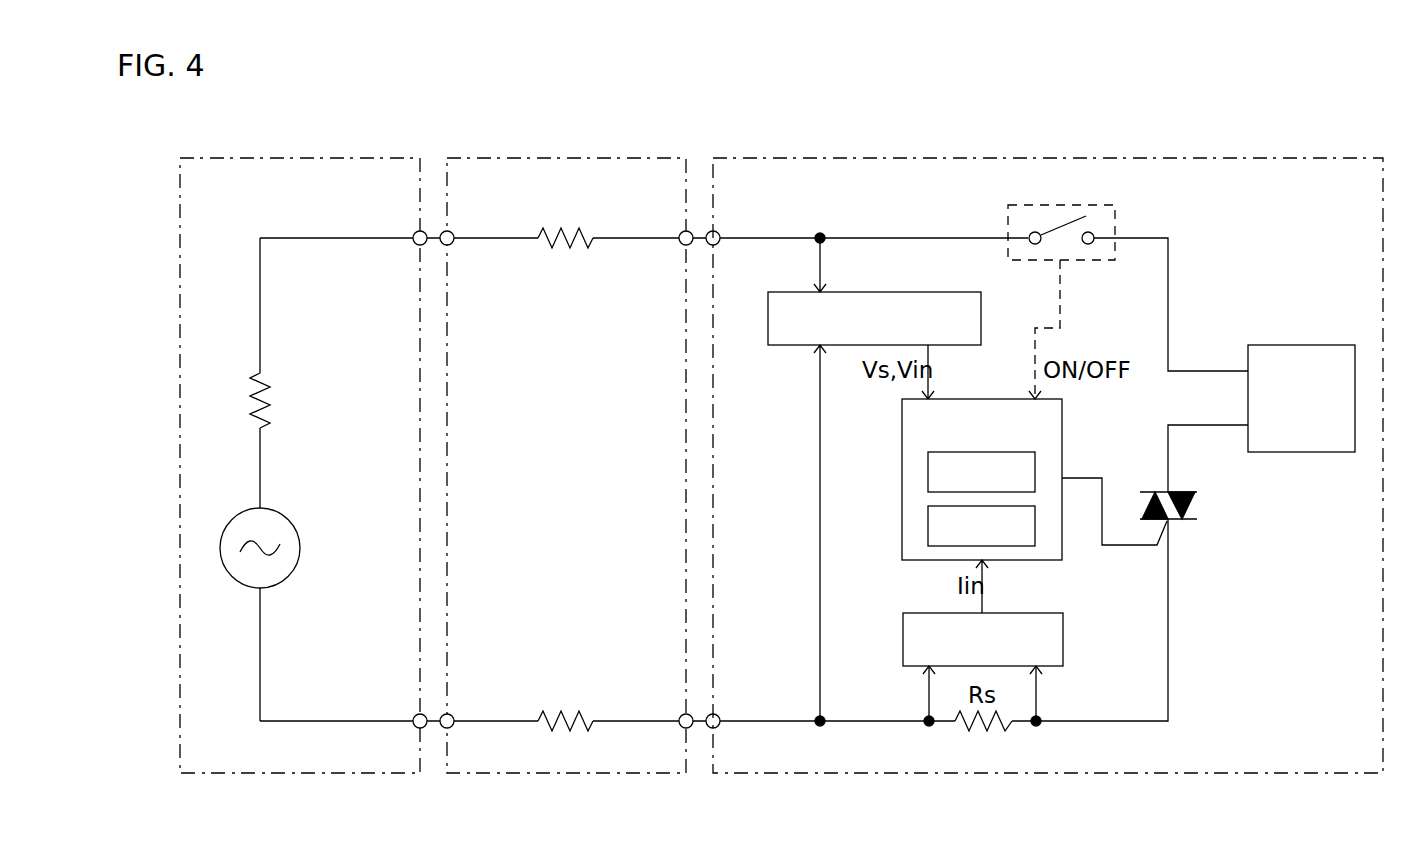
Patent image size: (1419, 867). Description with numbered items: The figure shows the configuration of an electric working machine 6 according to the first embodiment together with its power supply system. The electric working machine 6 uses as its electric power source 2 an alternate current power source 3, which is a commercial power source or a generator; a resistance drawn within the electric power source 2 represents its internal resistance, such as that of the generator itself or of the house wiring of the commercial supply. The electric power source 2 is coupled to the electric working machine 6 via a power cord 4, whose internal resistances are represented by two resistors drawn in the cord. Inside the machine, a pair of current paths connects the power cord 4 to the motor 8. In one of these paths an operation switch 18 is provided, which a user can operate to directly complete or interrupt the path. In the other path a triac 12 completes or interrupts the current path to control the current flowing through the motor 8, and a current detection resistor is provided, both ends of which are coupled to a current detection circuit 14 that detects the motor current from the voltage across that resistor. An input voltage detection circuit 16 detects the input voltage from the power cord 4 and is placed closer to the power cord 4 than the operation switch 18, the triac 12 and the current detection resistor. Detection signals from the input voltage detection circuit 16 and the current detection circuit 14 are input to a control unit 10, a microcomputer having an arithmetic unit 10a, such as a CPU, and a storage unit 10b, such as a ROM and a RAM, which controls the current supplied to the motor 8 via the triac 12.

The electric power source 2 is at (303, 156).
The alternate current (AC) power source 3 is at (287, 522).
The power cord 4 is at (567, 156).
The electric working machine 6 is at (1049, 156).
The motor 8 is at (1300, 345).
The control unit 10 is at (1062, 426).
The arithmetic unit 10a is at (928, 525).
The storage unit 10b is at (928, 471).
The triac 12 is at (1200, 507).
The current detection circuit 14 is at (1040, 612).
The input voltage detection circuit 16 is at (876, 291).
The operation switch 18 is at (1094, 205).